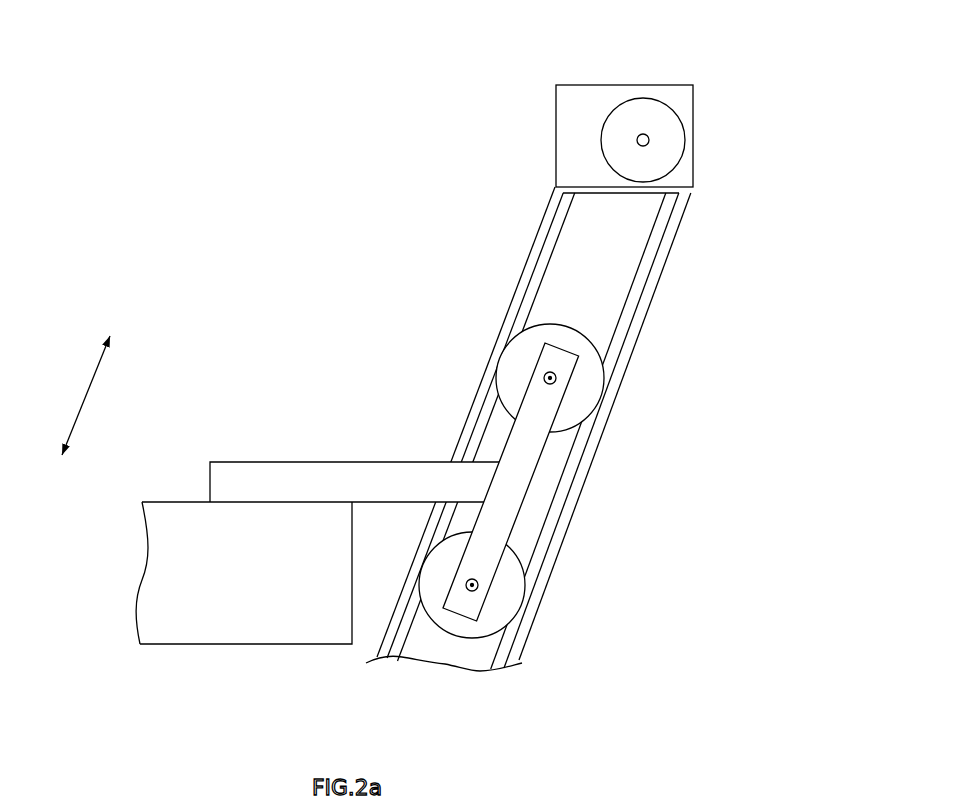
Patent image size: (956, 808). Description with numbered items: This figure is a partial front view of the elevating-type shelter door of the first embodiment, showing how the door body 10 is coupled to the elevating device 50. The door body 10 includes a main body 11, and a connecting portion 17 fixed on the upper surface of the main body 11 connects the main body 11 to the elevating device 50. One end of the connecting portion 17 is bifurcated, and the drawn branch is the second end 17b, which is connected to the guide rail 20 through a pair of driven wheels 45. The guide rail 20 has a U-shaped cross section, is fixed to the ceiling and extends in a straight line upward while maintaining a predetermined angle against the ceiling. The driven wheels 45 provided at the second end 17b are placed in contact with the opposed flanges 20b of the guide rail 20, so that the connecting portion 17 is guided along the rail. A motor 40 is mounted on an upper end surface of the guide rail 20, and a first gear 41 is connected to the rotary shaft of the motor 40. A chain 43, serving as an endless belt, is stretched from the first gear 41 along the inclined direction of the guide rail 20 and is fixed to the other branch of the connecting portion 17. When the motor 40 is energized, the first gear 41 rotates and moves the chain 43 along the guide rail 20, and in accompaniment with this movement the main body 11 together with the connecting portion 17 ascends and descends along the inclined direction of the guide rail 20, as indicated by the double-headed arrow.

The door body 10 is at (207, 404).
The main body 11 is at (217, 645).
The connecting portion 17 is at (240, 461).
The second end 17b is at (300, 470).
The guide rail 20 is at (573, 429).
The flange 20b is at (543, 238).
The motor 40 is at (556, 118).
The first gear 41 is at (605, 123).
The chain 43 is at (645, 312).
The driven wheel 45 is at (585, 388).
The elevating device 50 is at (760, 128).